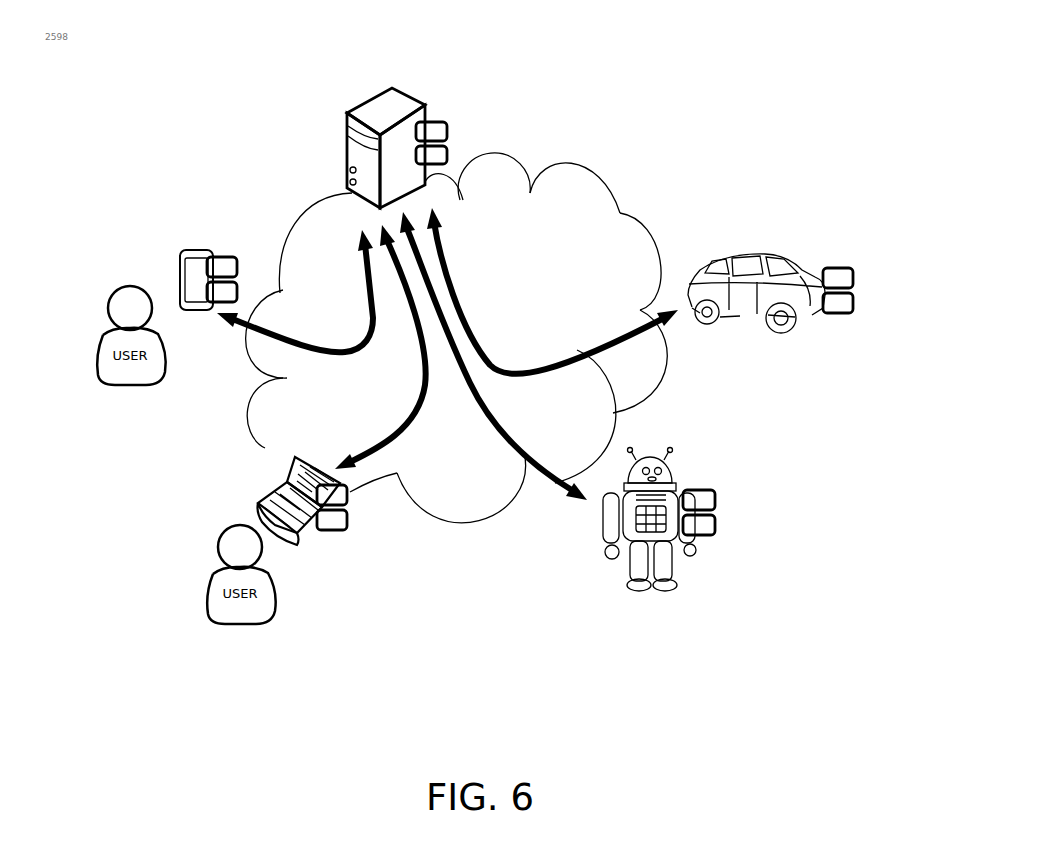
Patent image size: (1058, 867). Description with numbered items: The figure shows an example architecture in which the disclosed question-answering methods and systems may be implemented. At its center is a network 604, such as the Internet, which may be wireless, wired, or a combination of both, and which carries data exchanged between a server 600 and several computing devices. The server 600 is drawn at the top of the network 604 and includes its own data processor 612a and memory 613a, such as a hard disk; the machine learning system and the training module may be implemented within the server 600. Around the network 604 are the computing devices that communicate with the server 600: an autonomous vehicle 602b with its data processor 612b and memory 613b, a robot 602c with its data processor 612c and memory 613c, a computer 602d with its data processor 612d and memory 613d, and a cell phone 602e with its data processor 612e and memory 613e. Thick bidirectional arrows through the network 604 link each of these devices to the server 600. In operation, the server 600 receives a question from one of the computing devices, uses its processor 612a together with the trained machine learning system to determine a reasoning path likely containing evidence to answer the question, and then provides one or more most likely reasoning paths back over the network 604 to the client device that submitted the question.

The server 600 is at (394, 80).
The network 604 is at (656, 236).
The autonomous vehicle 602b is at (788, 243).
The robot 602c is at (679, 464).
The computer 602d is at (254, 498).
The cell phone 602e is at (170, 249).
The processor 612a is at (458, 126).
The memory 613a is at (458, 151).
The data processor 612b is at (866, 275).
The memory 613b is at (866, 296).
The data processor 612c is at (729, 495).
The memory 613c is at (729, 516).
The data processor 612d is at (358, 500).
The memory 613d is at (362, 523).
The data processor 612e is at (246, 265).
The memory 613e is at (246, 288).